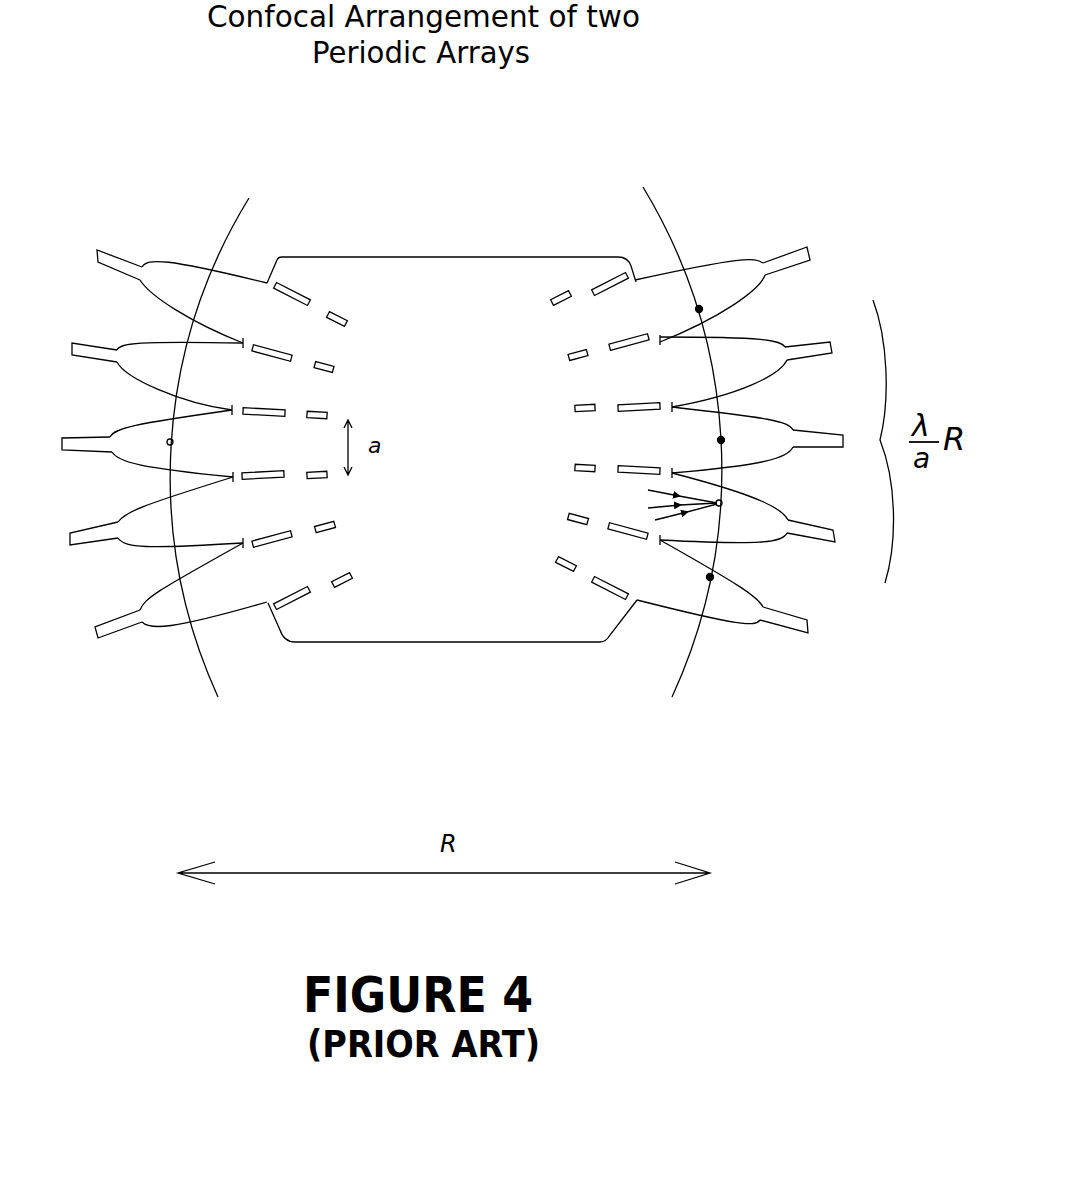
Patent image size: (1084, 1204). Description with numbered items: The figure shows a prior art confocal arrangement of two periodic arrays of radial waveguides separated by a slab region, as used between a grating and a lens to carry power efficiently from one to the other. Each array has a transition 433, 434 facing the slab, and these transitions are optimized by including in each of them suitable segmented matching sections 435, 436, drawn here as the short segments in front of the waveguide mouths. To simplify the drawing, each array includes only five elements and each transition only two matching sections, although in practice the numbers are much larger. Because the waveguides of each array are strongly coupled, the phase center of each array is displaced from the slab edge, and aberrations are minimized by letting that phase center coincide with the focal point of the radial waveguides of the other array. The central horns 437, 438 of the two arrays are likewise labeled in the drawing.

The transition 433 is at (377, 638).
The transition 434 is at (695, 737).
The segmented matching sections 435 is at (360, 598).
The segmented matching sections 436 is at (623, 620).
The first array central horn antenna 437 is at (160, 433).
The second array central horn antenna 438 is at (730, 427).